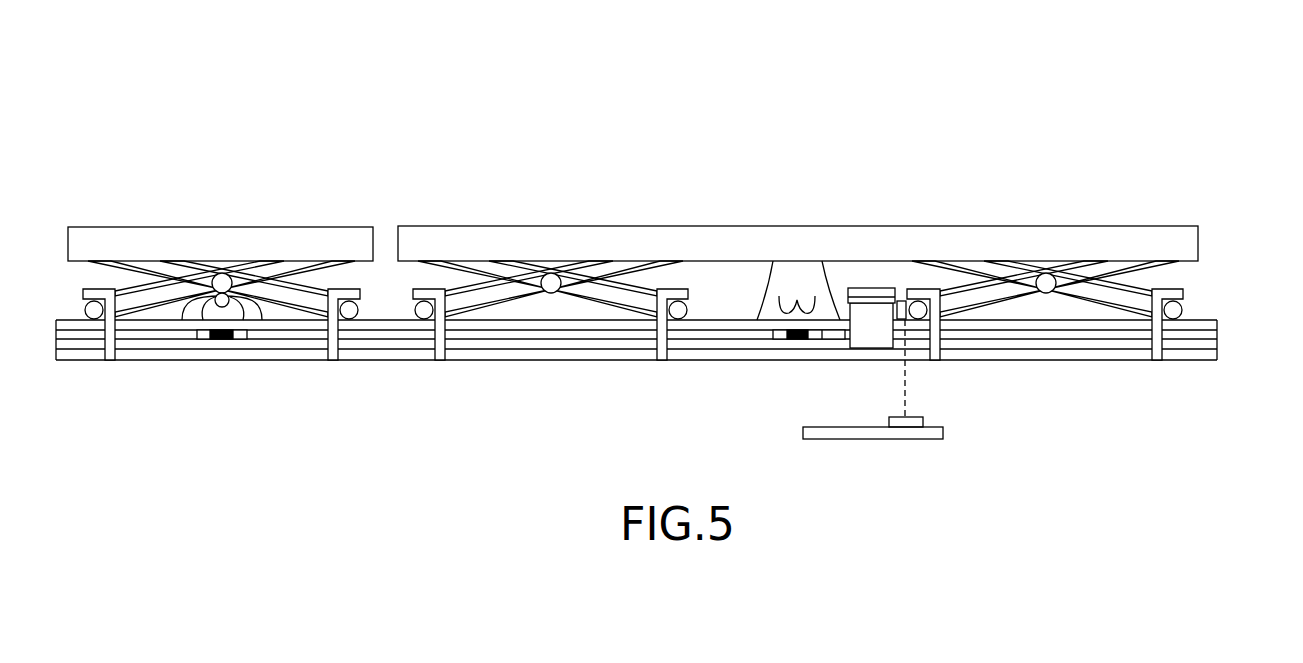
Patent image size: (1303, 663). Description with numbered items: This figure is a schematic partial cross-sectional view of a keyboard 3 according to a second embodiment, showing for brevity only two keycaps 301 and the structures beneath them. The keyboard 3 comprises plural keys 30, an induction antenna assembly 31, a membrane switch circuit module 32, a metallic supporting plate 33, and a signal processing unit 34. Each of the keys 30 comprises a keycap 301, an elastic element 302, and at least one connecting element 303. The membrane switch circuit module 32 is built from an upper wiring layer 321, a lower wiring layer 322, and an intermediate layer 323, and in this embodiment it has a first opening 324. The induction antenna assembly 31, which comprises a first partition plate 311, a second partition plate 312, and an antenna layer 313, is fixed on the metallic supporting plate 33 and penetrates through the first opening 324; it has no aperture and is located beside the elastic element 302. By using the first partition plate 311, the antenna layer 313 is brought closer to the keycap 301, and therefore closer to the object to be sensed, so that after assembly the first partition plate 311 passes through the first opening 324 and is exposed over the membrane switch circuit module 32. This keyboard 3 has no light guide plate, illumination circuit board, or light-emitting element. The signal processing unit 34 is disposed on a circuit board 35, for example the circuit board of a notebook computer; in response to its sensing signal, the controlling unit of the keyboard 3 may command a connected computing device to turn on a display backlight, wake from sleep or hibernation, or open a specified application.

The keyboard 3 is at (1057, 127).
The keys 30 is at (147, 73).
The keycap 301 is at (273, 238).
The elastic element 302 is at (193, 307).
The connecting element 303 is at (168, 270).
The induction antenna assembly 31 is at (265, 73).
The first partition plate 311 is at (873, 342).
The second partition plate 312 is at (870, 292).
The antenna layer 313 is at (845, 300).
The membrane switch circuit module 32 is at (382, 73).
The upper wiring layer 321 is at (1185, 323).
The lower wiring layer 322 is at (1202, 345).
The intermediate layer 323 is at (1202, 335).
The first opening 324 is at (912, 300).
The metallic supporting plate 33 is at (1178, 355).
The signal processing unit 34 is at (910, 422).
The circuit board 35 is at (908, 432).